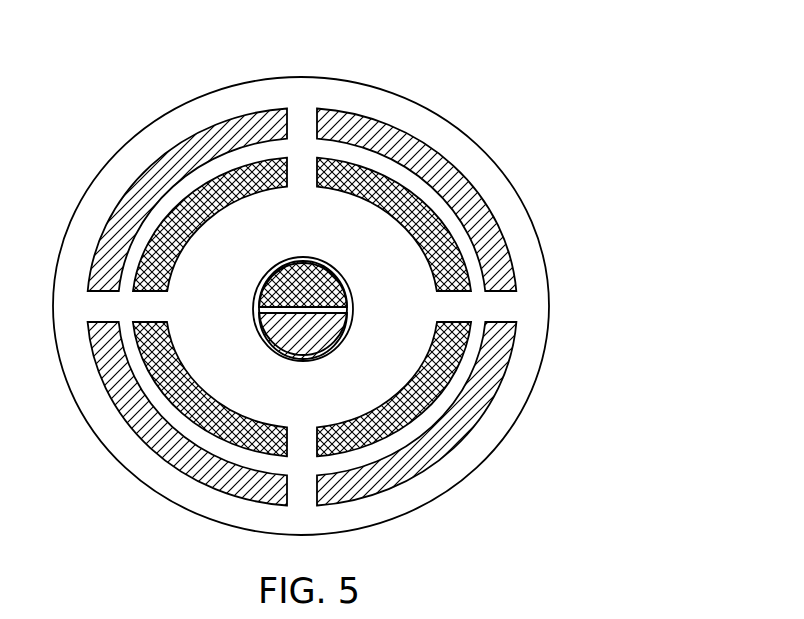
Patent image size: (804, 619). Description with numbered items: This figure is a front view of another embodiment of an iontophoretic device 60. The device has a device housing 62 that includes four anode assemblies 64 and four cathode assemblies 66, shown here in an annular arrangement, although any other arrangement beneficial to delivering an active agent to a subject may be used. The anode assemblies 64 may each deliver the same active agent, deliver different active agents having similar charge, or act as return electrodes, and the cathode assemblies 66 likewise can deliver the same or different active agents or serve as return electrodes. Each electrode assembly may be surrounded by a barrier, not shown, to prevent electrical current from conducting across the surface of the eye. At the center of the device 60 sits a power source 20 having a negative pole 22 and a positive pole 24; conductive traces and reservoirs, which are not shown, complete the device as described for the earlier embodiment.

The iontophoretic device 60 is at (383, 56).
The device housing 62 is at (532, 212).
The cathode assemblies 66 is at (428, 142).
The anode assemblies 64 is at (452, 377).
The power source 20 is at (263, 273).
The negative pole 22 is at (293, 258).
The positive pole 24 is at (273, 347).